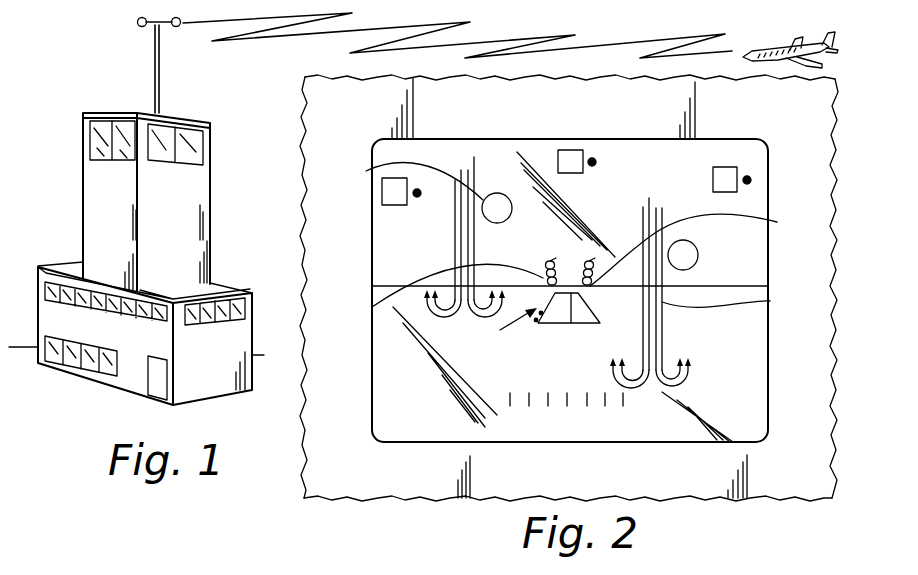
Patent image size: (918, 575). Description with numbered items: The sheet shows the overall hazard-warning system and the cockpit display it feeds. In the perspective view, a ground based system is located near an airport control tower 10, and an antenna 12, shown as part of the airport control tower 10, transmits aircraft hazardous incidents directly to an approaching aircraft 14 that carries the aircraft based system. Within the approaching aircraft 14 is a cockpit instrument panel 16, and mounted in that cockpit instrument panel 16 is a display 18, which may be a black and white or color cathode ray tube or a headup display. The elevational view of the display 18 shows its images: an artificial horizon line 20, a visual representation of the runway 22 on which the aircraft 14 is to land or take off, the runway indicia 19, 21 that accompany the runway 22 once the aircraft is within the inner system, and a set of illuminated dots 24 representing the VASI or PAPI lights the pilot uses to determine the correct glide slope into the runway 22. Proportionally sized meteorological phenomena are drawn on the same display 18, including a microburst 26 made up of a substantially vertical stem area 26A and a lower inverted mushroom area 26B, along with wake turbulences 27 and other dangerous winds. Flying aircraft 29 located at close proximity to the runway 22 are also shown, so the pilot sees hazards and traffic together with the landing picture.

In FIG. 1, the airport control tower 10 is at (215, 215).
In FIG. 1, the antenna 12 is at (168, 73).
In FIG. 2, the approaching aircraft 14 is at (787, 34).
In FIG. 2, the cockpit instrument panel 16 is at (296, 93).
In FIG. 2, the display 18 is at (586, 130).
In FIG. 2, the runway indicia 19 is at (770, 222).
In FIG. 2, the artificial horizon line 20 is at (380, 285).
In FIG. 2, the runway indicia 21 is at (567, 402).
In FIG. 2, the runway 22 is at (553, 322).
In FIG. 2, the illuminated dots 24 is at (500, 330).
In FIG. 2, the microburst 26 is at (680, 337).
In FIG. 2, the vertical stem area 26A is at (780, 302).
In FIG. 2, the lower inverted mushroom area 26B is at (428, 316).
In FIG. 2, the wake turbulence 27 is at (372, 305).
In FIG. 2, the flying aircraft 29 is at (417, 200).